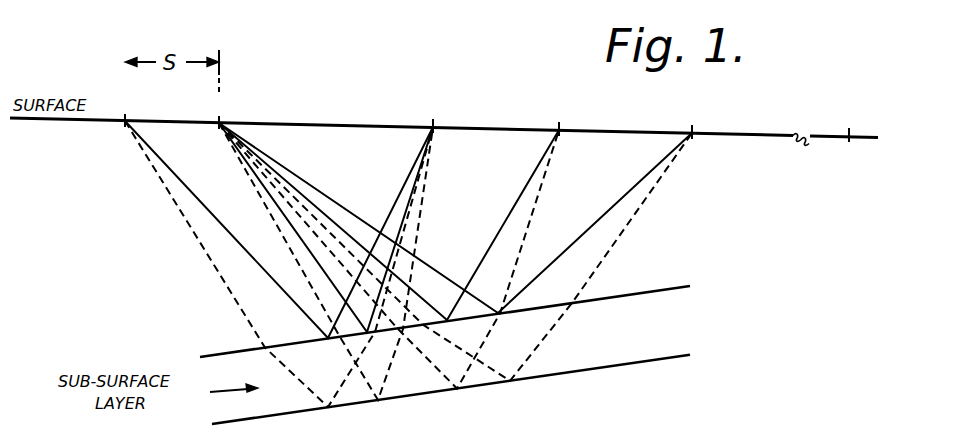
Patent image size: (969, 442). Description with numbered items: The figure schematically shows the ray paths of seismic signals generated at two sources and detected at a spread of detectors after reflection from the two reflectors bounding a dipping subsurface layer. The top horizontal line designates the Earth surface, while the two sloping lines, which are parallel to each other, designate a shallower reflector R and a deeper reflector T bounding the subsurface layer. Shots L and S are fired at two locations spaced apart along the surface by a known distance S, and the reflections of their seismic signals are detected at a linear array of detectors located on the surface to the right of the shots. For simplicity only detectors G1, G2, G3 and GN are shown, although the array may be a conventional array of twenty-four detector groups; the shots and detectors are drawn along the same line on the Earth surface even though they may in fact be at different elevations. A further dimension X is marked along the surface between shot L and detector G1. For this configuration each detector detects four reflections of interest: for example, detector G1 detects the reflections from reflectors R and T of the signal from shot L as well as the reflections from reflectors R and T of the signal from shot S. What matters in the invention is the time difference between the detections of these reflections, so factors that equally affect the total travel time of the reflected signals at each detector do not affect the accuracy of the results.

The shot L is at (121, 111).
The shot S is at (216, 112).
The detector G1 is at (430, 117).
The detector G2 is at (557, 120).
The detector G3 is at (690, 123).
The detector GN is at (846, 125).
The distance X between shot point and geophone X is at (433, 90).
The shallower reflector R is at (503, 309).
The deeper reflector T is at (509, 377).